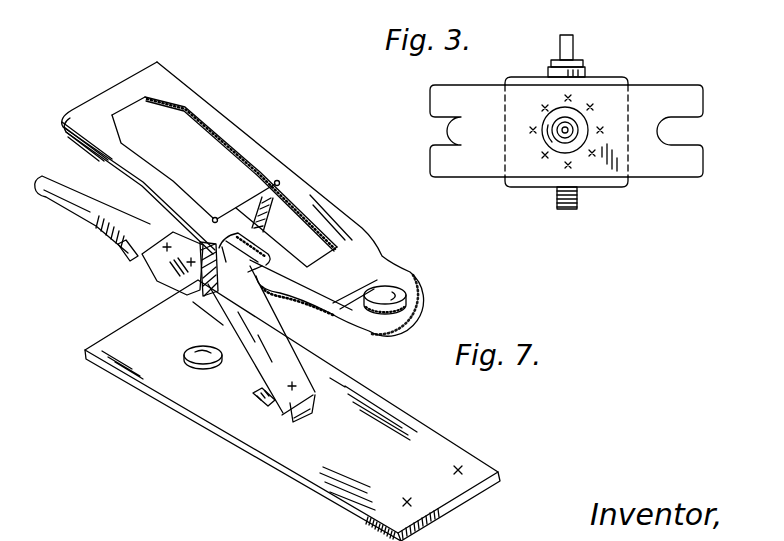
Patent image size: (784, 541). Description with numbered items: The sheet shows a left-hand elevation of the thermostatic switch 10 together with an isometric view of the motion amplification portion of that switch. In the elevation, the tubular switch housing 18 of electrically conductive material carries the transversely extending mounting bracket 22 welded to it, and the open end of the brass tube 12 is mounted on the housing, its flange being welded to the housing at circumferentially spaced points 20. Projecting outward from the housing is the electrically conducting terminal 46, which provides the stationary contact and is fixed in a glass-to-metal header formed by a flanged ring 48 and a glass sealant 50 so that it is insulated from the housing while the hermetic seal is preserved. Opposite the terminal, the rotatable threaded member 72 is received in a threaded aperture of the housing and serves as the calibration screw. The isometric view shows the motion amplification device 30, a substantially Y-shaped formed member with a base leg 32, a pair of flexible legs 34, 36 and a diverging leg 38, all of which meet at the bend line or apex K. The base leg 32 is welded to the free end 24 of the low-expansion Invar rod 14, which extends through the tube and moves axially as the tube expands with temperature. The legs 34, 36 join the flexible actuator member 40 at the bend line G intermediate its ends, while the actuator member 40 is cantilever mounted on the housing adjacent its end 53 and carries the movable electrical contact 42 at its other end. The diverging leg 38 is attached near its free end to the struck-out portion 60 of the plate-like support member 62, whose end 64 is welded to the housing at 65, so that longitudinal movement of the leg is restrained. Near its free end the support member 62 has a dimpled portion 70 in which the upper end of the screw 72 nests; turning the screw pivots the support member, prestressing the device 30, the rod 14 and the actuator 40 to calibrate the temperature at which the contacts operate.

In FIG. 3, the thermostatic switch 10 is at (678, 57).
In FIG. 3, the tube 12 is at (580, 122).
In FIG. 3, the switch housing 18 is at (617, 182).
In FIG. 3, the welding points 20 is at (530, 128).
In FIG. 3, the mounting bracket 22 is at (482, 170).
In FIG. 3, the terminal 46 is at (560, 42).
In FIG. 3, the flanged ring 48 is at (551, 63).
In FIG. 3, the glass sealant 50 is at (579, 58).
In FIG. 3, the threaded member 72 is at (557, 202).
In FIG. 7, the motion amplification device 30 is at (299, 144).
In FIG. 7, the end of actuator member 53 is at (118, 95).
In FIG. 7, the actuator member 40 is at (338, 212).
In FIG. 7, the leg 36 is at (265, 232).
In FIG. 7, the connection portion G is at (215, 217).
In FIG. 7, the electrical contact 42 is at (402, 297).
In FIG. 7, the rod 14 is at (68, 210).
In FIG. 7, the free end of rod 24 is at (117, 249).
In FIG. 7, the base leg 32 is at (154, 278).
In FIG. 7, the leg 34 is at (205, 297).
In FIG. 7, the bend line K is at (247, 268).
In FIG. 7, the leg 38 is at (273, 342).
In FIG. 7, the struck-out portion 60 is at (258, 390).
In FIG. 7, the support member 62 is at (333, 382).
In FIG. 7, the end of support member 64 is at (447, 495).
In FIG. 7, the welding 65 is at (430, 465).
In FIG. 7, the dimpled portion 70 is at (190, 357).